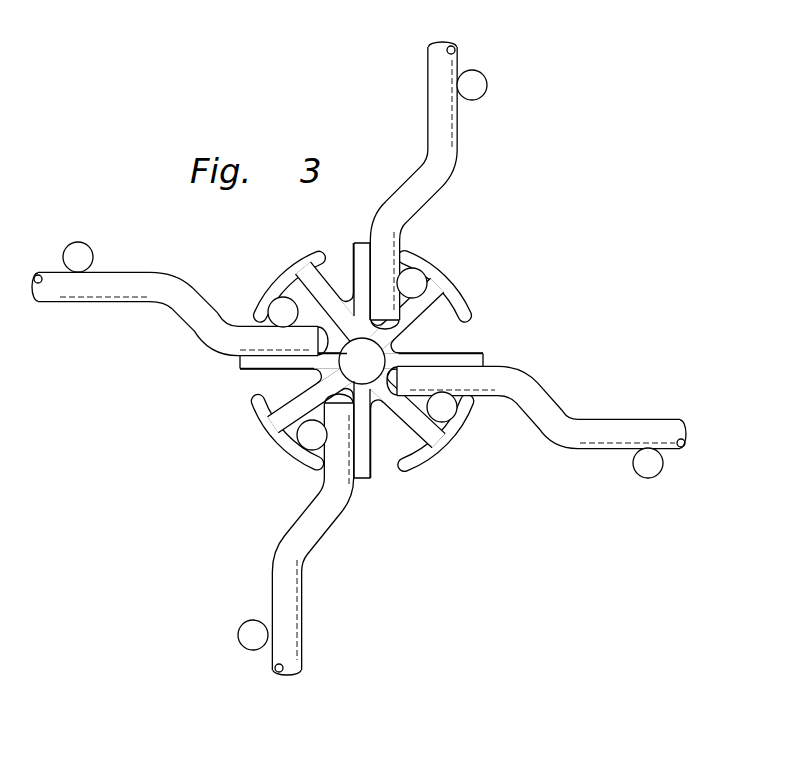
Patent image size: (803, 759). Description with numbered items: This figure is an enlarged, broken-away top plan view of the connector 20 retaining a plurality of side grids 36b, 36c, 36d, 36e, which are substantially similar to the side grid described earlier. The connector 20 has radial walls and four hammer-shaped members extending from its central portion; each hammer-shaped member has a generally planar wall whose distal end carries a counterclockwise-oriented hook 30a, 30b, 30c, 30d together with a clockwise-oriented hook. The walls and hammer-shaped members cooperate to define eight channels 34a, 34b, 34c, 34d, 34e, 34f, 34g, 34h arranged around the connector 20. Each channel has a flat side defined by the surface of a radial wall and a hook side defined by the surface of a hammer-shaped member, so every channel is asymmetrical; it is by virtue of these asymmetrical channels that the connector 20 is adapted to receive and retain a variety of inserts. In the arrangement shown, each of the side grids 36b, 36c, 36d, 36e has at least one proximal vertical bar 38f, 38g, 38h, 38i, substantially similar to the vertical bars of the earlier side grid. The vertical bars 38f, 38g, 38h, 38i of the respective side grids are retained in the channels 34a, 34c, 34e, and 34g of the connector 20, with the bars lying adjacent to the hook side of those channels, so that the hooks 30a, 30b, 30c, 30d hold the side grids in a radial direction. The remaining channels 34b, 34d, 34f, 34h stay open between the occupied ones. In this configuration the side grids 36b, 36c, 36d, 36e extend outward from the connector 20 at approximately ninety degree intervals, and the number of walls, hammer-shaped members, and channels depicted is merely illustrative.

The connector 20 is at (369, 368).
The counterclockwise-oriented hook 30a is at (241, 318).
The counterclockwise-oriented hook 30b is at (410, 268).
The counterclockwise-oriented hook 30c is at (478, 400).
The counterclockwise-oriented hook 30d is at (318, 477).
The channel 34a is at (222, 332).
The channel 34b is at (340, 260).
The channel 34c is at (408, 242).
The channel 34d is at (475, 338).
The channel 34e is at (512, 398).
The channel 34f is at (383, 470).
The channel 34g is at (321, 504).
The channel 34h is at (258, 378).
The side grid 36b is at (138, 271).
The side grid 36c is at (458, 150).
The side grid 36d is at (607, 418).
The side grid 36e is at (303, 602).
The proximal vertical bar 38f is at (283, 310).
The proximal vertical bar 38g is at (420, 282).
The proximal vertical bar 38h is at (444, 418).
The proximal vertical bar 38i is at (302, 442).